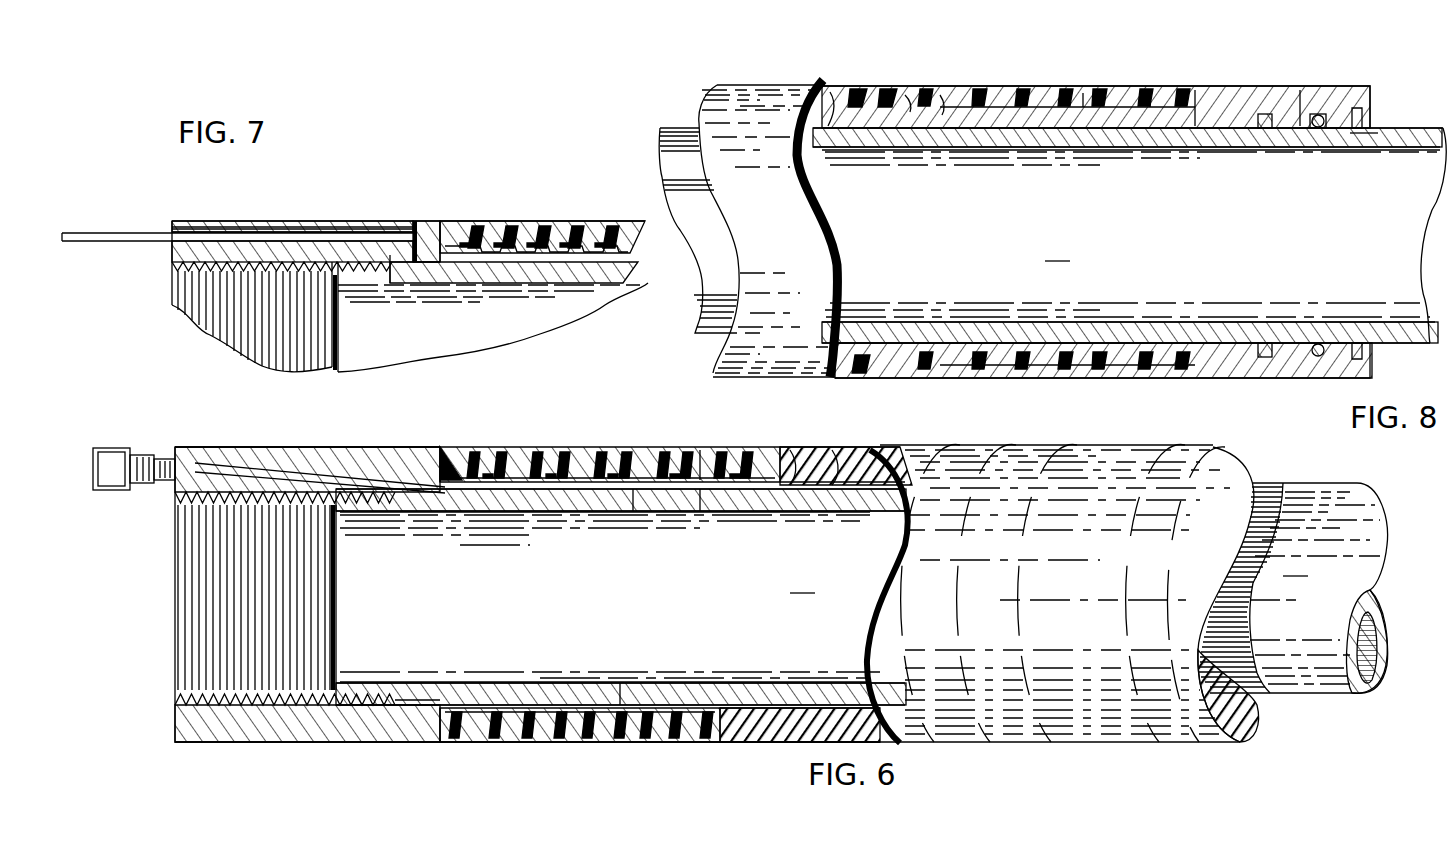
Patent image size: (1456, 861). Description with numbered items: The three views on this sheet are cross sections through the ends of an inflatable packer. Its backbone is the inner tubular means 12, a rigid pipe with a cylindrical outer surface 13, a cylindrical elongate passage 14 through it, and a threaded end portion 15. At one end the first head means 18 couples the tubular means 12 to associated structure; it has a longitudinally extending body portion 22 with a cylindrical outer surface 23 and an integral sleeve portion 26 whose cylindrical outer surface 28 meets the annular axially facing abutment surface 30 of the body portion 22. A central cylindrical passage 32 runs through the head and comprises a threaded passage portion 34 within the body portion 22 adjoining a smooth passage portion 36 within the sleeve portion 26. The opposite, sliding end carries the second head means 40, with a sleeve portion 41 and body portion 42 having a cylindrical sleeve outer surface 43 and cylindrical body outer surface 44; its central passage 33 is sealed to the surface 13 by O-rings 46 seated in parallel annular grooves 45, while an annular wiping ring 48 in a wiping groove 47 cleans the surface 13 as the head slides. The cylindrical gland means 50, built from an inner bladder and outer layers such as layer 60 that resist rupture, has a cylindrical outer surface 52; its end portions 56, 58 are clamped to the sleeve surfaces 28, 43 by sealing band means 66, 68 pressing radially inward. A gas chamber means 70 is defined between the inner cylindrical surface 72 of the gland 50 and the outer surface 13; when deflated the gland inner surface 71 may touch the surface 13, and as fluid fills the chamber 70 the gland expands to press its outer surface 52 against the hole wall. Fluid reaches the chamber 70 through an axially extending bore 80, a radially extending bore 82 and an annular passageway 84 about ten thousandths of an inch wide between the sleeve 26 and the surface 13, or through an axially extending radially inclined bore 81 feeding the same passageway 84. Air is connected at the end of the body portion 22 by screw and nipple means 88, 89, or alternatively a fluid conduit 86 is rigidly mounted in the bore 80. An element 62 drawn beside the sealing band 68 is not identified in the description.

In FIG. 8, the inner tubular means 12 is at (1392, 130).
In FIG. 6, the inner tubular means 12 is at (1383, 510).
In FIG. 8, the cylindrical outer surface 13 is at (990, 125).
In FIG. 6, the cylindrical outer surface 13 is at (548, 454).
In FIG. 6, the cylindrical elongate passage 14 is at (1373, 641).
In FIG. 7, the threaded end portion 15 is at (338, 265).
In FIG. 6, the threaded end portion 15 is at (386, 715).
In FIG. 6, the first head means 18 is at (335, 785).
In FIG. 7, the body portion 22 is at (355, 222).
In FIG. 6, the body portion 22 is at (330, 448).
In FIG. 7, the cylindrical outer surface 23 is at (370, 222).
In FIG. 7, the sleeve portion 26 is at (520, 236).
In FIG. 6, the sleeve portion 26 is at (570, 452).
In FIG. 6, the cylindrical outer surface 28 is at (600, 453).
In FIG. 7, the annular axially facing abutment surface 30 is at (443, 225).
In FIG. 6, the annular axially facing abutment surface 30 is at (448, 452).
In FIG. 6, the central elongate cylindrical passage 32 is at (156, 633).
In FIG. 8, the central cylindrical passage 33 is at (1427, 272).
In FIG. 7, the threaded passage portion 34 is at (230, 315).
In FIG. 6, the threaded passage portion 34 is at (205, 667).
In FIG. 7, the smooth passage portion 36 is at (370, 320).
In FIG. 6, the smooth passage portion 36 is at (360, 595).
In FIG. 8, the second head means 40 is at (1366, 57).
In FIG. 8, the sleeve portion 41 is at (946, 100).
In FIG. 8, the body portion 42 is at (1213, 92).
In FIG. 8, the cylindrical sleeve outer surface 43 is at (917, 97).
In FIG. 8, the cylindrical body outer surface 44 is at (1270, 92).
In FIG. 8, the O-ring annular grooves 45 is at (1318, 130).
In FIG. 8, the O-rings 46 is at (1265, 128).
In FIG. 8, the annular wiping groove 47 is at (1362, 110).
In FIG. 8, the annular wiping ring 48 is at (1352, 140).
In FIG. 8, the cylindrical gland means 50 is at (722, 90).
In FIG. 6, the cylindrical gland means 50 is at (950, 458).
In FIG. 8, the cylindrical outer surface 52 is at (788, 86).
In FIG. 6, the cylindrical outer surface 52 is at (1078, 425).
In FIG. 6, the gland end portion 56 is at (749, 453).
In FIG. 8, the gland end portion 58 is at (960, 92).
In FIG. 6, the outer layer 60 is at (478, 452).
In FIG. 8, the seal element 62 is at (1160, 96).
In FIG. 6, the sealing band means 66 is at (695, 453).
In FIG. 8, the sealing band means 68 is at (1086, 96).
In FIG. 8, the gas chamber means 70 is at (845, 110).
In FIG. 6, the gas chamber means 70 is at (790, 470).
In FIG. 6, the inner surface 71 is at (832, 470).
In FIG. 6, the inner cylindrical surface 72 is at (620, 700).
In FIG. 7, the axially extending bore 80 is at (297, 226).
In FIG. 6, the axially extending radially inclined bore 81 is at (245, 462).
In FIG. 7, the radially extending bore 82 is at (430, 225).
In FIG. 7, the annular passageway 84 is at (497, 272).
In FIG. 6, the annular passageway 84 is at (700, 500).
In FIG. 7, the fluid conduit 86 is at (121, 230).
In FIG. 6, the screw means 88 is at (160, 455).
In FIG. 6, the nipple means 89 is at (115, 448).